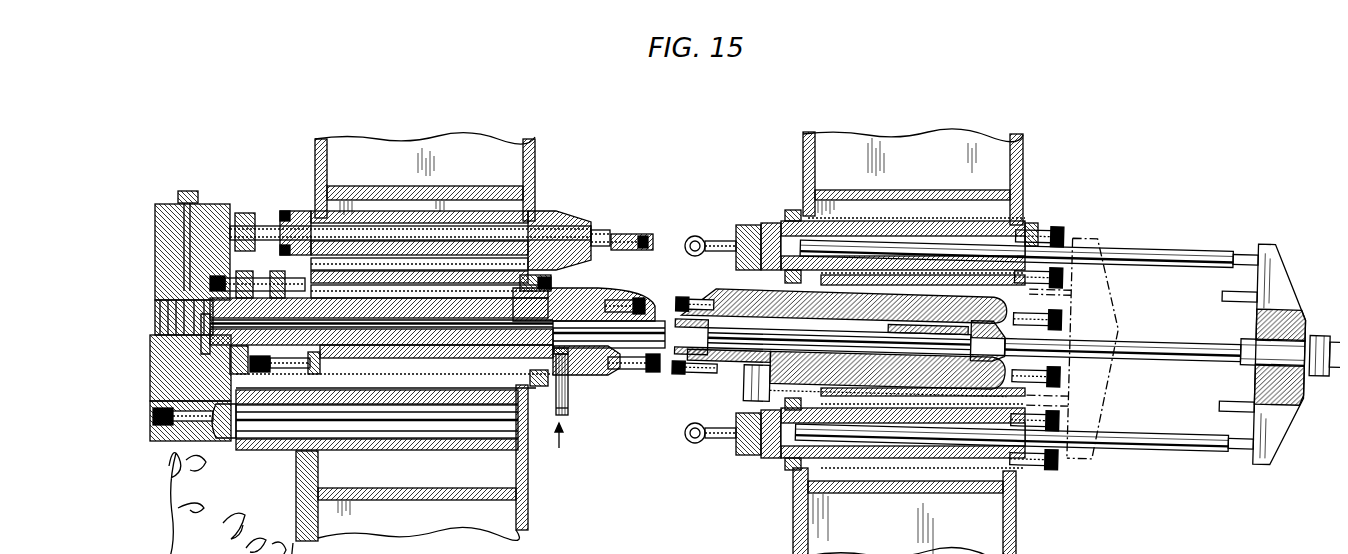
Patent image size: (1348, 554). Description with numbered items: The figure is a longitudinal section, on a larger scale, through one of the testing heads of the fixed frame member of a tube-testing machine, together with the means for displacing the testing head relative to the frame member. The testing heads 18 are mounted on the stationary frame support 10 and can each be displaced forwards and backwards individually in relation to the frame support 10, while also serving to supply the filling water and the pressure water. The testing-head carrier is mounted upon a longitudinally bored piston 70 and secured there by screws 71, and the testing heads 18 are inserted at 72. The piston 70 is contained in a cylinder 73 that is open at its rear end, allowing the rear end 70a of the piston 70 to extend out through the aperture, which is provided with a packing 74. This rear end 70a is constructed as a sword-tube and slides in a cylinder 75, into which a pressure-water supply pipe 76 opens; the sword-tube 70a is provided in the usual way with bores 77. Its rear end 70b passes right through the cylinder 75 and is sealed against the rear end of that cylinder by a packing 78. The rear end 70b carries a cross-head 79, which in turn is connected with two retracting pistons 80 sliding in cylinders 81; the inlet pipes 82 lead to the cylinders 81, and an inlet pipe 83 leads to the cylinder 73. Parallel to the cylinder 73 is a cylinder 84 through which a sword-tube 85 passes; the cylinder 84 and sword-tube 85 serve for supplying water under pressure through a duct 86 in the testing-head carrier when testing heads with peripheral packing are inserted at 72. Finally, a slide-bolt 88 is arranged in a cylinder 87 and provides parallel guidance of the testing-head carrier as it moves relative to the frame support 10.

The frame support 10 is at (387, 172).
The testing head 18 is at (225, 199).
The piston 70 is at (543, 288).
The rear end of the piston 70a is at (655, 298).
The rear end of the sword-tube 70b is at (1141, 332).
The screws 71 is at (218, 355).
The insertion point for testing heads 72 is at (208, 354).
The cylinder 73 is at (561, 368).
The packing 74 is at (605, 363).
The cylinder 75 is at (733, 277).
The pressure-water supply pipe 76 is at (737, 373).
The bores 77 is at (997, 329).
The packing 78 is at (1034, 287).
The cross-head 79 is at (1278, 242).
The retracting pistons 80 is at (1168, 222).
The cylinders 81 is at (878, 208).
The inlet pipes 82 is at (686, 228).
The inlet pipe 83 is at (558, 400).
The cylinder 84 is at (497, 199).
The sword-tube 85 is at (607, 223).
The duct 86 is at (173, 238).
The cylinder 87 is at (404, 449).
The slide-bolt 88 is at (285, 500).